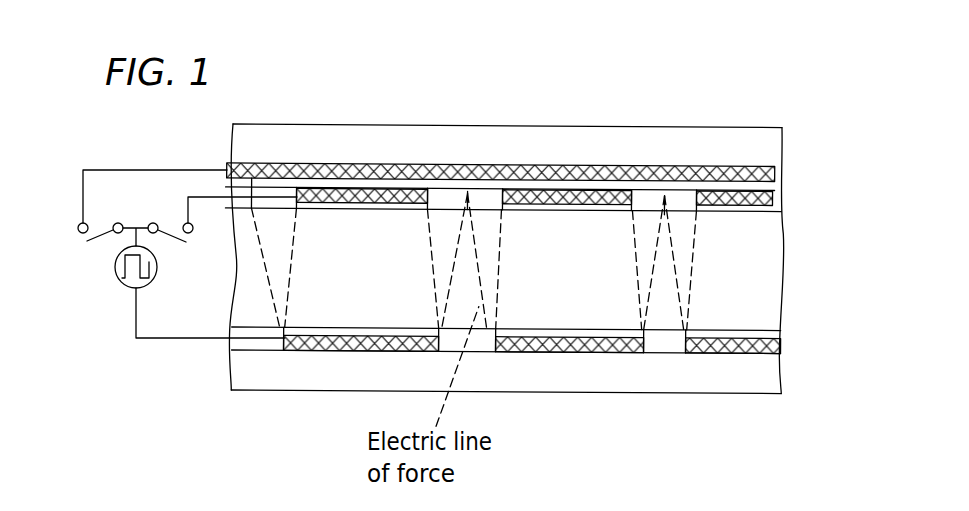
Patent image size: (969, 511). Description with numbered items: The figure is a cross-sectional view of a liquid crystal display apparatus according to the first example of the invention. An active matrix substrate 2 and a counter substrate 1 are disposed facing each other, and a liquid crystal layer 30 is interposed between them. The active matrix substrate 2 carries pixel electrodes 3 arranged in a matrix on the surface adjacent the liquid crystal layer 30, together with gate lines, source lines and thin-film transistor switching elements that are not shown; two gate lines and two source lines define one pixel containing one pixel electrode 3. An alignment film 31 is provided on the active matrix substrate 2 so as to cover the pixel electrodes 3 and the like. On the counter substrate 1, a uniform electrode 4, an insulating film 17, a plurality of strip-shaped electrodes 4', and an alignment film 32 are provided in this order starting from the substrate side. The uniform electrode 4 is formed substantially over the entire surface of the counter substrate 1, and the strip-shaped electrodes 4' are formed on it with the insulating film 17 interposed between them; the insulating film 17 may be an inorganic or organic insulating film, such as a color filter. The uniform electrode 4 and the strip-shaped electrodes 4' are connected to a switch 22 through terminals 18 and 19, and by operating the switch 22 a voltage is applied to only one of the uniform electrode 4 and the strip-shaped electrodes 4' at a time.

The counter substrate 1 is at (508, 140).
The active matrix substrate 2 is at (557, 373).
The pixel electrodes 3 is at (607, 352).
The uniform electrode 4 is at (501, 127).
The strip-shaped electrodes 4' is at (534, 139).
The insulating film 17 is at (696, 210).
The terminal 18 is at (92, 243).
The terminal 19 is at (197, 234).
The switch 22 is at (118, 283).
The liquid crystal layer 30 is at (765, 282).
The alignment film 31 is at (778, 335).
The alignment film 32 is at (755, 212).